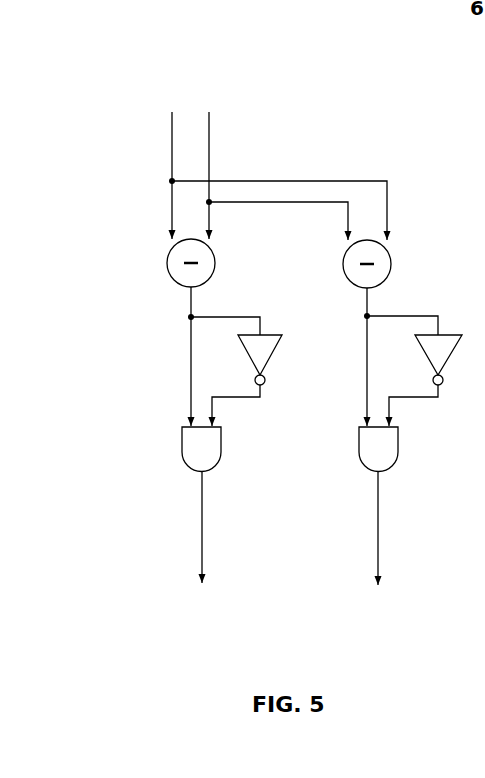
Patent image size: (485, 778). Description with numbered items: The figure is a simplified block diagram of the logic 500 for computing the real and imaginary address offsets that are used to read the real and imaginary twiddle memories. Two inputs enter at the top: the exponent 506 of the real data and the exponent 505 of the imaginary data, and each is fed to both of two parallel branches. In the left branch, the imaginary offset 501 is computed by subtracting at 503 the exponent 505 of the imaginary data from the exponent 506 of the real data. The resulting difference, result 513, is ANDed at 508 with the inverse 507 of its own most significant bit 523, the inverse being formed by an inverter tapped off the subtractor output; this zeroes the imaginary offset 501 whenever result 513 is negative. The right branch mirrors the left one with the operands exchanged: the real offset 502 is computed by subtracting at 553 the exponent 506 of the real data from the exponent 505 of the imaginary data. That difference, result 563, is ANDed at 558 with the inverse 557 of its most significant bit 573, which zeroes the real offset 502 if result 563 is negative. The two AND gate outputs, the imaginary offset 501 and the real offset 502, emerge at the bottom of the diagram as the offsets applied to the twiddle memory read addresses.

The logic 500 is at (172, 38).
The exponent of the real data 506 is at (172, 153).
The exponent of the imaginary data 505 is at (209, 153).
The subtractor 503 is at (168, 262).
The subtractor 553 is at (392, 263).
The result 513 is at (191, 355).
The most significant bit 523 is at (225, 317).
The inverse 507 is at (236, 397).
The AND gate 508 is at (182, 440).
The imaginary offset 501 is at (202, 528).
The result 563 is at (367, 358).
The most significant bit 573 is at (403, 316).
The inverse 557 is at (404, 397).
The AND gate 558 is at (398, 458).
The real offset 502 is at (378, 527).